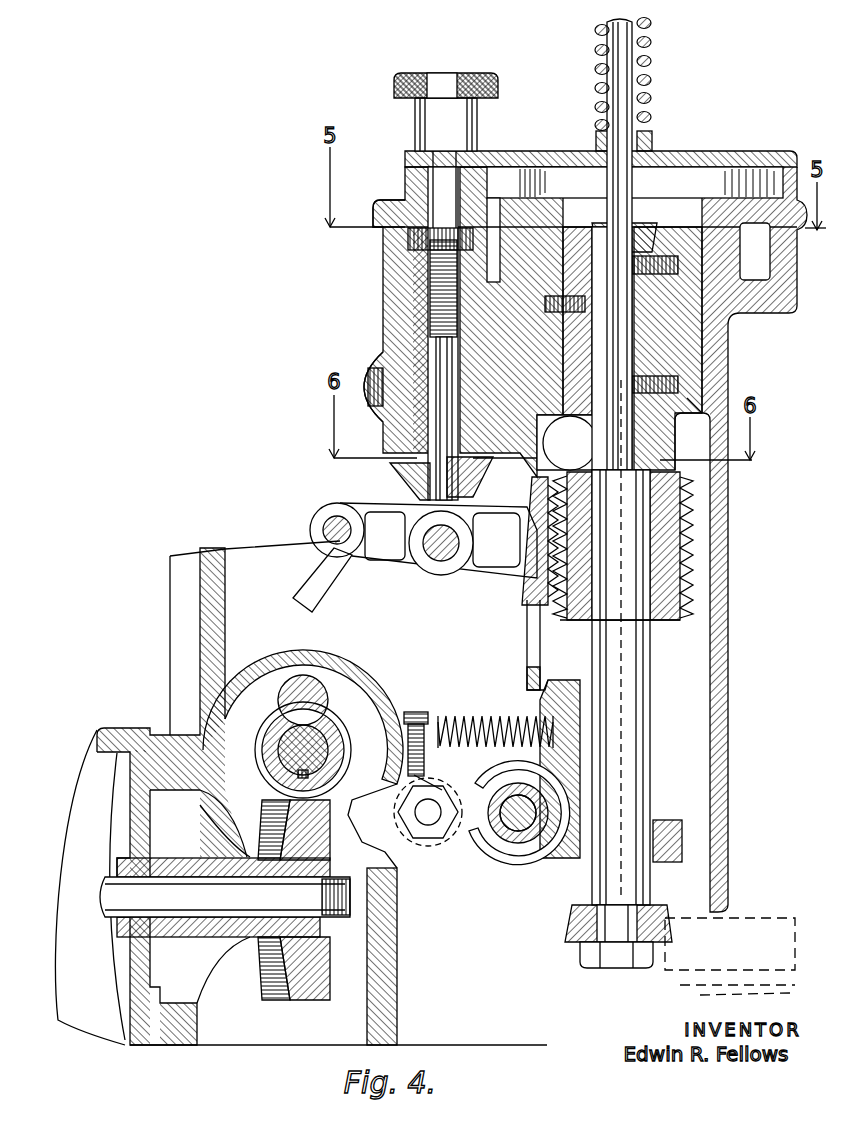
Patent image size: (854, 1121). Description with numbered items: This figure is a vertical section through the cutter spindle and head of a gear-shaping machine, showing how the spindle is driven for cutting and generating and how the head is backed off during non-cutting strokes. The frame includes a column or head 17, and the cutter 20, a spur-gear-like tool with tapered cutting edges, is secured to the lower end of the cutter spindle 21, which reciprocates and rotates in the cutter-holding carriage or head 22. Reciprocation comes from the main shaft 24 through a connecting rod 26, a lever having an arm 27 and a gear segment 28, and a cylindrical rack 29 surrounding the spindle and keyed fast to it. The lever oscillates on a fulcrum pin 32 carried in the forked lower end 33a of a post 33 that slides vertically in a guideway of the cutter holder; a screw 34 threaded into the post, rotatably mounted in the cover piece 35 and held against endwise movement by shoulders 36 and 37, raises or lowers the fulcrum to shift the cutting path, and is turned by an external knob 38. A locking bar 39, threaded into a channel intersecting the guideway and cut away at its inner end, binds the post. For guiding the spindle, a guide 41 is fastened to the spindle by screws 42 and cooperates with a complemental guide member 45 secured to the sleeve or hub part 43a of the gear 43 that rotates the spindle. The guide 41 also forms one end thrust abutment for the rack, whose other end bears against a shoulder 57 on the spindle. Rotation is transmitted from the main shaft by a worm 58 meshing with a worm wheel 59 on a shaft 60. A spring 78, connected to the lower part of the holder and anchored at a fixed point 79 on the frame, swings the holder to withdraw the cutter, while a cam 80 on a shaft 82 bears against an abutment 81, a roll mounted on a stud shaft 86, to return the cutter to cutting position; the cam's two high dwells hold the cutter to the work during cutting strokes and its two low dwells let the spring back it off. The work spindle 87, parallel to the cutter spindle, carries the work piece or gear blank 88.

The column or head 17 is at (215, 576).
The cutter 20 is at (586, 926).
The cutter spindle 21 is at (630, 672).
The cutter-holding carriage or head 22 is at (400, 296).
The main shaft 24 is at (318, 746).
The connecting rod 26 is at (300, 580).
The lever arm 27 is at (388, 547).
The gear segment 28 is at (522, 586).
The cylindrical rack 29 is at (690, 583).
The fulcrum pin 32 is at (441, 562).
The post 33 is at (395, 472).
The forked lower end 33a is at (420, 497).
The adjusting screw 34 is at (430, 266).
The cover piece 35 is at (515, 156).
The shoulder 36 is at (398, 206).
The shoulder 37 is at (417, 151).
The head or knob 38 is at (395, 82).
The locking bar 39 is at (378, 379).
The guide 41 is at (665, 352).
The screws 42 is at (665, 386).
The gear 43 is at (540, 228).
The sleeve or hub part 43a is at (687, 398).
The guide member 45 is at (613, 227).
The shoulder 57 is at (612, 623).
The worm 58 is at (310, 710).
The worm wheel 59 is at (290, 816).
The shaft 60 is at (160, 889).
The spring 78 is at (470, 716).
The fixed anchor point 79 is at (412, 712).
The cam 80 is at (432, 784).
The abutment 81 is at (485, 850).
The shaft 82 is at (426, 813).
The stud shaft 86 is at (522, 822).
The work spindle 87 is at (718, 996).
The work piece or gear blank 88 is at (698, 931).